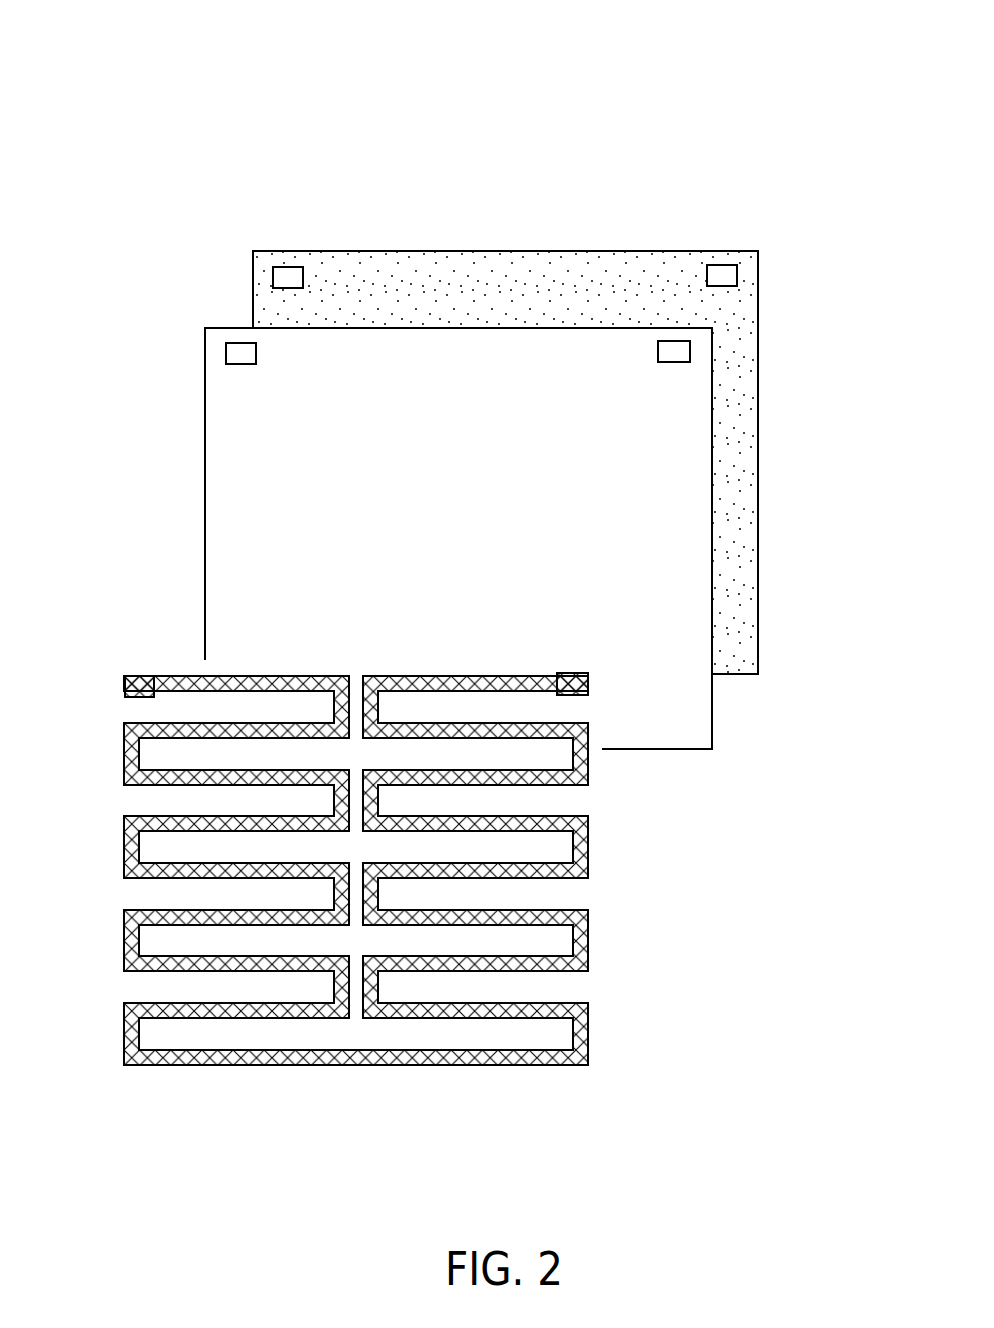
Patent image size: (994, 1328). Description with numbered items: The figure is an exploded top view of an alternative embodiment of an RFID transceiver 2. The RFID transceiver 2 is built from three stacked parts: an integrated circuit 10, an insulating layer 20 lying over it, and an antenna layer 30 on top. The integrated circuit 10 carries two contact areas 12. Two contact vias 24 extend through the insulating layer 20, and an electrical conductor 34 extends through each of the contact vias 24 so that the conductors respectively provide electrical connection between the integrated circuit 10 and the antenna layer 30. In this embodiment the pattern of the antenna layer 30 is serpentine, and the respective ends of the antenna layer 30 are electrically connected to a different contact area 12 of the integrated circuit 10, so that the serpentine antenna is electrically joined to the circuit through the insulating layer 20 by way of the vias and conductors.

The RFID transceiver 2 is at (785, 64).
The integrated circuit 10 is at (512, 275).
The contact area 12 is at (277, 273).
The insulating layer 20 is at (227, 487).
The contact via 24 is at (232, 356).
The antenna layer 30 is at (125, 745).
The electrical conductor 34 is at (143, 676).